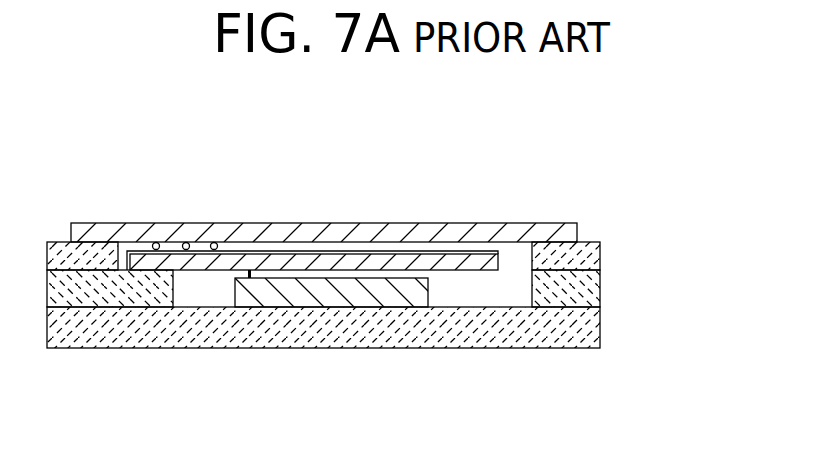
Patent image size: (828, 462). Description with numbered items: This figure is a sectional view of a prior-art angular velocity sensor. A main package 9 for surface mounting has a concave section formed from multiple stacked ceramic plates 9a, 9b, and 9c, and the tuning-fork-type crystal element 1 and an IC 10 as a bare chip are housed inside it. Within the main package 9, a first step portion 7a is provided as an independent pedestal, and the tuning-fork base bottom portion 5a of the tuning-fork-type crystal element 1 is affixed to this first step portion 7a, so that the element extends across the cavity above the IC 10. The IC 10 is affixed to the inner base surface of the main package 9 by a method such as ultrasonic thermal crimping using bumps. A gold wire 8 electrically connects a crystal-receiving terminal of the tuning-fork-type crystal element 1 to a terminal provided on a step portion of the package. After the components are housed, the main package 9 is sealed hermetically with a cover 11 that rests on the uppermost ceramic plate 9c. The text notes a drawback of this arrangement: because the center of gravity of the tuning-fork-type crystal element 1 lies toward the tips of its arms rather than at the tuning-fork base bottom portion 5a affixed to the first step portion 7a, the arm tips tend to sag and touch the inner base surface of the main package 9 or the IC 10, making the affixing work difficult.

The tuning-fork-type crystal element 1 is at (311, 237).
The tuning-fork base bottom portion 5a is at (140, 265).
The first step portion 7a is at (150, 296).
The gold wire 8 is at (214, 242).
The main package 9 is at (382, 294).
The ceramic plate 9a is at (363, 327).
The ceramic plate 9b is at (600, 291).
The ceramic plate 9c is at (600, 254).
The IC 10 is at (360, 298).
The cover 11 is at (460, 223).